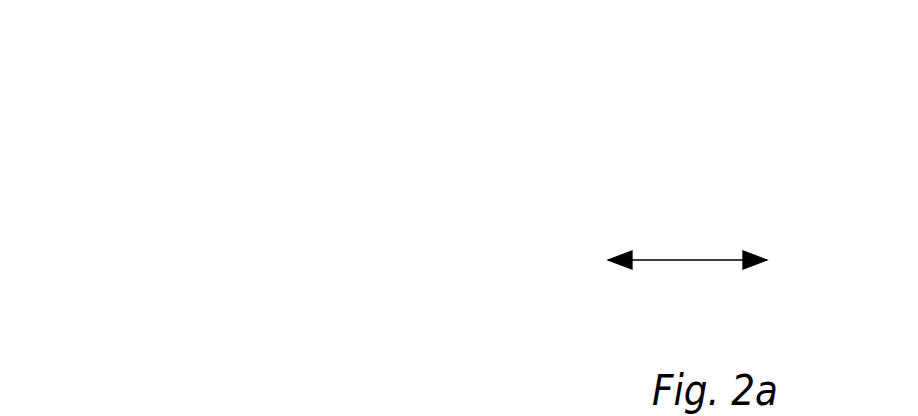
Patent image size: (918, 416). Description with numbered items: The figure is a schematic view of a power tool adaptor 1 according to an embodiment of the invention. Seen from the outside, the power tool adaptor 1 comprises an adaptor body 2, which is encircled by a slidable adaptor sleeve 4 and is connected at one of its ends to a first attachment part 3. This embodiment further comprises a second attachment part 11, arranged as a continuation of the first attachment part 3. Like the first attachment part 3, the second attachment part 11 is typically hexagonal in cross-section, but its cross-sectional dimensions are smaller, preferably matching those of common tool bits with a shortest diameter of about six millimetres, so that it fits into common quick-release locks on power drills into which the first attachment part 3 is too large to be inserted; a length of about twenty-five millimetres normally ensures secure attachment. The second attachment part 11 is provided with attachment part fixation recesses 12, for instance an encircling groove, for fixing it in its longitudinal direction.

The power tool adaptor 1 is at (432, 193).
The adaptor body 2 is at (549, 159).
The first attachment part 3 is at (432, 146).
The adaptor sleeve 4 is at (696, 155).
The second attachment part 11 is at (176, 182).
The attachment part fixation recess 12 is at (80, 182).